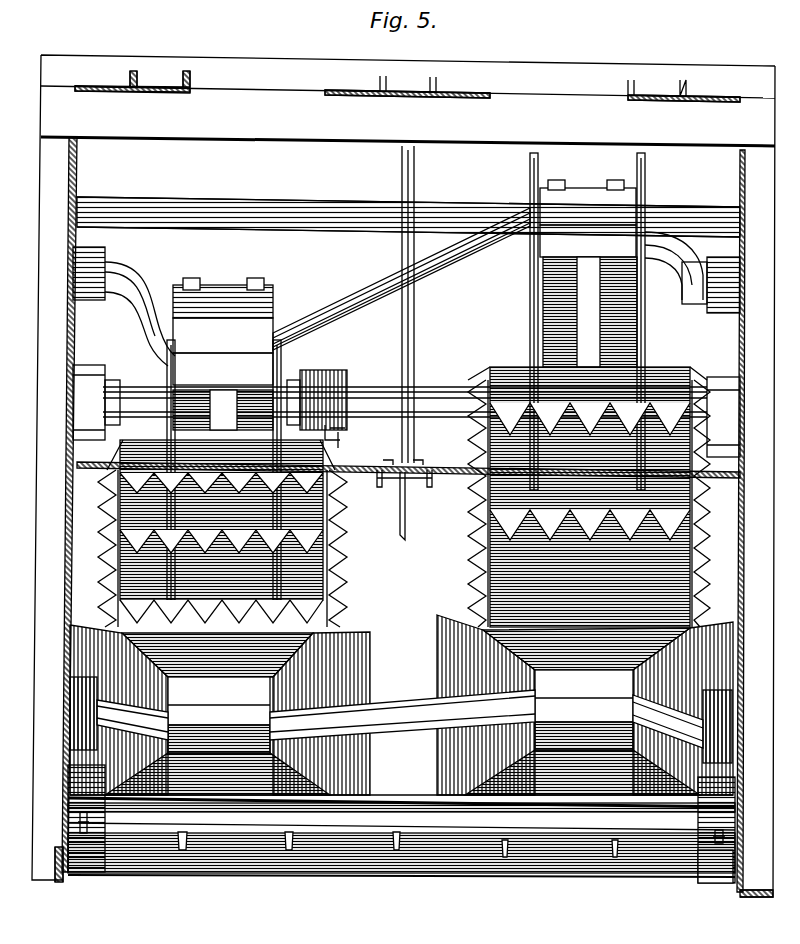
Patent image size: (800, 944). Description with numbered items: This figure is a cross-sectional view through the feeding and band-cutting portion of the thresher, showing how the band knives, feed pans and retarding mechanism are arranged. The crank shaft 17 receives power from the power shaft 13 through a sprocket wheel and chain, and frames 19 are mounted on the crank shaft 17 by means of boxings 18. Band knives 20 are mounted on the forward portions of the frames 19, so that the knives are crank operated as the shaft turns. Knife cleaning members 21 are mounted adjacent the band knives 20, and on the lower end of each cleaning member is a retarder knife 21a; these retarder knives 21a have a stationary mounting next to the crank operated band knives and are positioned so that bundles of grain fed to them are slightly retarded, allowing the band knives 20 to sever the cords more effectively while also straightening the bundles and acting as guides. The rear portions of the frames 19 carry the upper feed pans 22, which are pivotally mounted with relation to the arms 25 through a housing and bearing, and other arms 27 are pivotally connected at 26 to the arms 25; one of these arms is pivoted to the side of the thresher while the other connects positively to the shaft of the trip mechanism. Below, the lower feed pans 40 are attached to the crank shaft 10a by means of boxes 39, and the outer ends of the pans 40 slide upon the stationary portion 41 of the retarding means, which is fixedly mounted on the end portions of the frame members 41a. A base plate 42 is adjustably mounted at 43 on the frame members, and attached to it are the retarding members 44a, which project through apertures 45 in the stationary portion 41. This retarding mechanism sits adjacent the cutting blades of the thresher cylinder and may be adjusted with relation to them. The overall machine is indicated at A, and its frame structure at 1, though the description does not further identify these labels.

The knife cleaning member 21 is at (158, 86).
The power shaft 13 is at (287, 200).
The band knife 20 is at (530, 165).
The boxing 18 is at (228, 290).
The crank shaft 17 is at (441, 275).
The arm 27 is at (113, 380).
The frame 19 is at (302, 405).
The pivotal connection 26 is at (440, 398).
The arm 25 is at (332, 432).
The retarder knife 21a is at (404, 512).
The upper feed pan 22 is at (336, 583).
The frame A is at (64, 663).
The frame post 1 is at (60, 788).
The box 39 is at (400, 711).
The lower feed pan 40 is at (401, 705).
The crank shaft 10a is at (418, 707).
The base plate 42 is at (245, 815).
The stationary portion 41 is at (632, 868).
The retarding member 44a is at (395, 850).
The aperture 45 is at (615, 857).
The adjustable mounting 43 is at (84, 835).
The frame member 41a is at (58, 862).